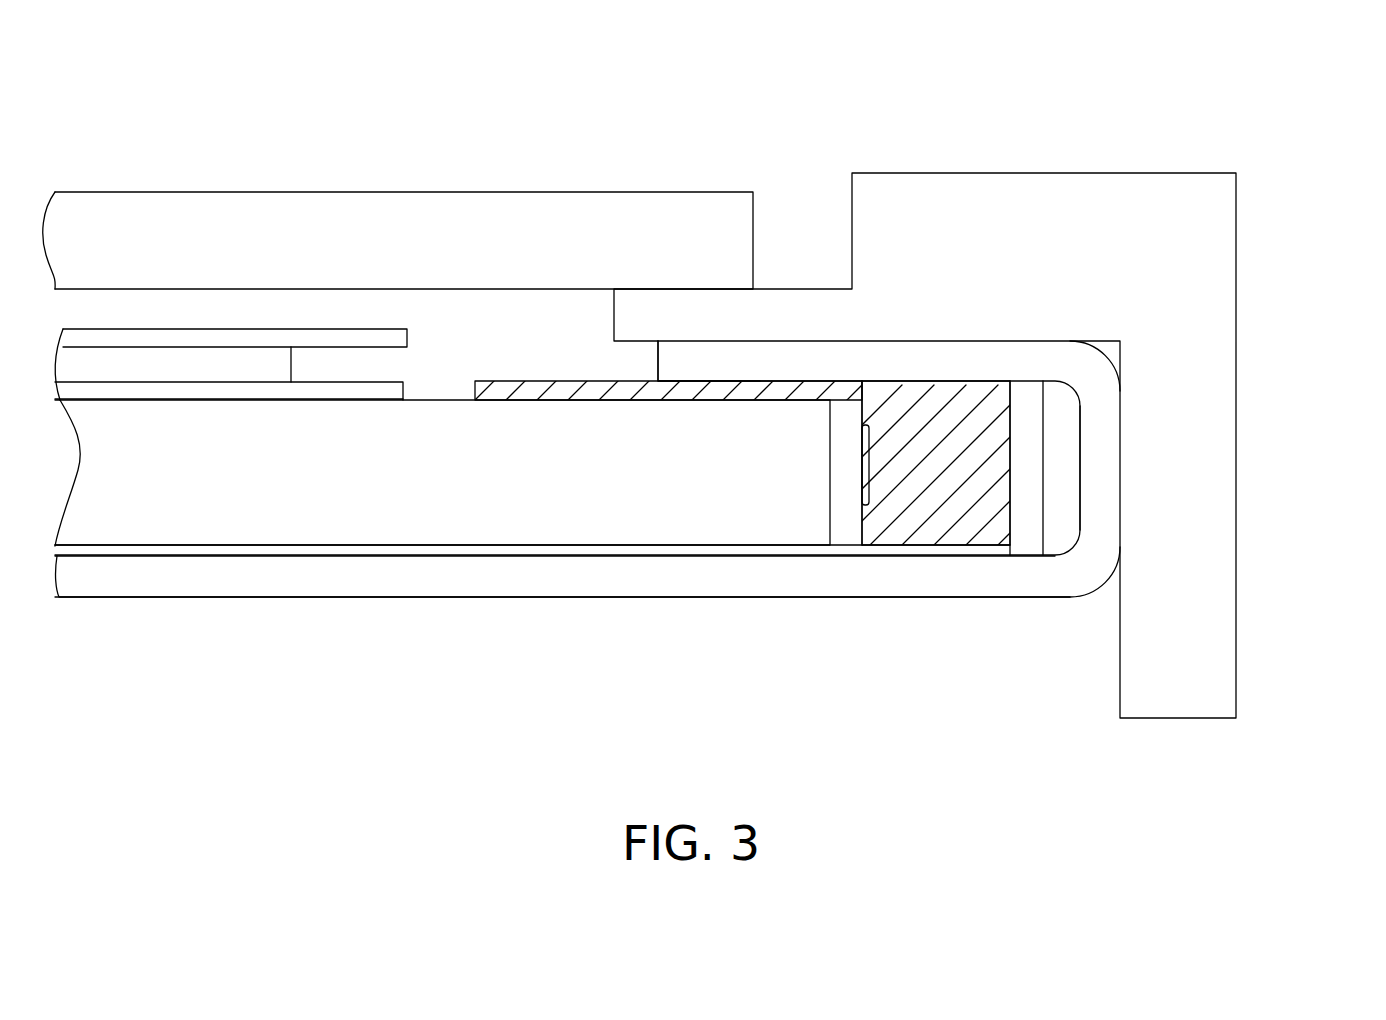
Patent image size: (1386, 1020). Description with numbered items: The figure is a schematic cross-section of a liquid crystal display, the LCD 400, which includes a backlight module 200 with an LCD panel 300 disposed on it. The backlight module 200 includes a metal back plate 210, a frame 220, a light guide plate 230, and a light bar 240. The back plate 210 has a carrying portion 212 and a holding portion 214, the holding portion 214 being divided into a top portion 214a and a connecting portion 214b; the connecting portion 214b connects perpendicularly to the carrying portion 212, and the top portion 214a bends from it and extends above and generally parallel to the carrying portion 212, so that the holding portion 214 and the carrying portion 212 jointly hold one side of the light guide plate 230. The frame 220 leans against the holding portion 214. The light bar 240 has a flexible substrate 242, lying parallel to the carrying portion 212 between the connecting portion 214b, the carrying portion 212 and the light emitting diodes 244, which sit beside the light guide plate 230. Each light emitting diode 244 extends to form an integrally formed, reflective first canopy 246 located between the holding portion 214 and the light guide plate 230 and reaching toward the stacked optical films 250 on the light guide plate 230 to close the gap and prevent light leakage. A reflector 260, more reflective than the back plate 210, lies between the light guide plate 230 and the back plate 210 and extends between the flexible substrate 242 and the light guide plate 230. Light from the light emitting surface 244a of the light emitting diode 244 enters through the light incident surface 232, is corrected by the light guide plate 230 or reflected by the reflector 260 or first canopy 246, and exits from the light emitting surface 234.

The backlight module 200 is at (1245, 513).
The back plate 210 is at (775, 678).
The carrying portion 212 is at (673, 573).
The holding portion 214 is at (748, 368).
The top portion 214a is at (692, 362).
The connecting portion 214b is at (1105, 406).
The frame 220 is at (1116, 185).
The light guide plate 230 is at (443, 408).
The light incident surface 232 is at (843, 427).
The light emitting surface 234 is at (377, 399).
The light bar 240 is at (1047, 672).
The flexible substrate 242 is at (1027, 547).
The light emitting diode 244 is at (933, 527).
The light emitting surface 244a is at (860, 461).
The first canopy 246 is at (556, 395).
The optical film 250 is at (103, 392).
The reflector 260 is at (243, 547).
The LCD panel 300 is at (515, 215).
The LCD 400 is at (1219, 799).